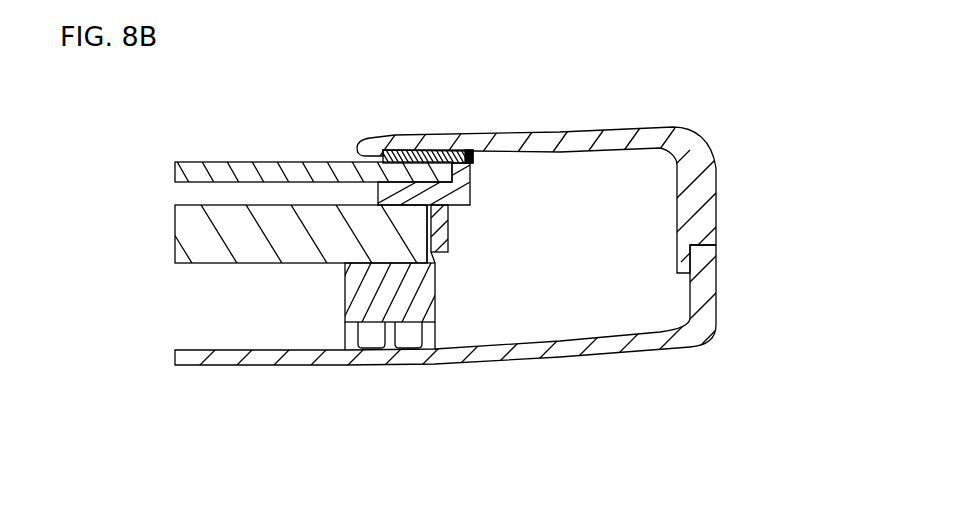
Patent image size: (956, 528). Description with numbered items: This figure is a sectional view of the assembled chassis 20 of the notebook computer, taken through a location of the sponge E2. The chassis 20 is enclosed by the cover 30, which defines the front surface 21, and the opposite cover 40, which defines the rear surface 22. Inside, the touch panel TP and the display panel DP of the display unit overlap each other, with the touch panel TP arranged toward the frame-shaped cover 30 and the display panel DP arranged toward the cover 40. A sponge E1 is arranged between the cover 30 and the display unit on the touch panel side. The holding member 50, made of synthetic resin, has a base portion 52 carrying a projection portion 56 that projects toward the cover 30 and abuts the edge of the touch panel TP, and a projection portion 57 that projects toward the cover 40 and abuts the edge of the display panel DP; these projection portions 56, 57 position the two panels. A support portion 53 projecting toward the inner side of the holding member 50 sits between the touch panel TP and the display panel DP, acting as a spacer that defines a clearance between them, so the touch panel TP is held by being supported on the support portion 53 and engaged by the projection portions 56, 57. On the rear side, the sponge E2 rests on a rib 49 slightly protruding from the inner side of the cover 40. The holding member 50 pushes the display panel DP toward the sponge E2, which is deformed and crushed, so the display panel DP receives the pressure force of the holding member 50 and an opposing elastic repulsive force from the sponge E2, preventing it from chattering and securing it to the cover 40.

The chassis 20 is at (500, 256).
The front surface 21 is at (583, 163).
The rear surface 22 is at (500, 351).
The cover 30 is at (716, 192).
The cover 40 is at (716, 288).
The rib 49 is at (430, 335).
The holding member 50 is at (472, 191).
The base portion 52 is at (470, 199).
The support portion 53 is at (383, 150).
The projection portion 56 is at (473, 182).
The projection portion 57 is at (449, 230).
The sponge E1 is at (447, 150).
The sponge E2 is at (436, 278).
The touch panel TP is at (270, 162).
The display panel DP is at (268, 264).